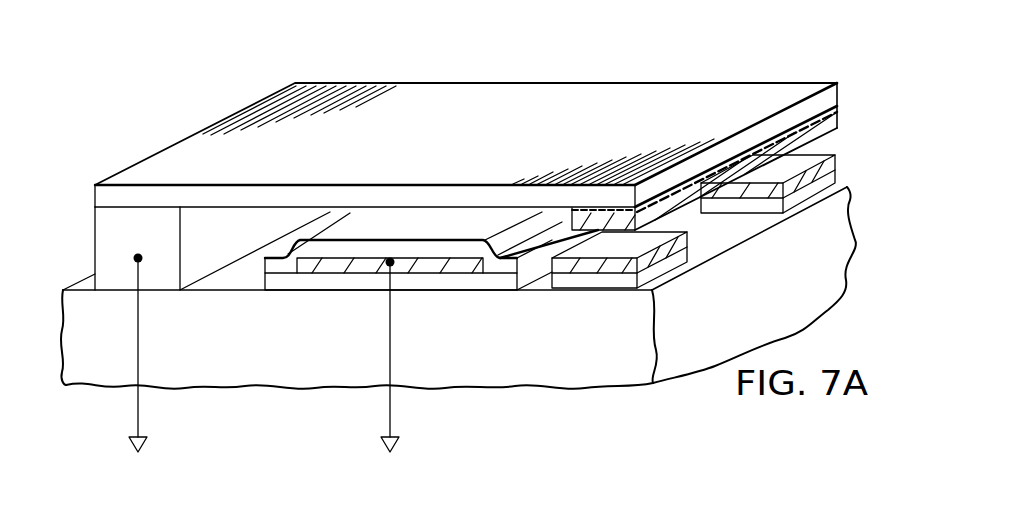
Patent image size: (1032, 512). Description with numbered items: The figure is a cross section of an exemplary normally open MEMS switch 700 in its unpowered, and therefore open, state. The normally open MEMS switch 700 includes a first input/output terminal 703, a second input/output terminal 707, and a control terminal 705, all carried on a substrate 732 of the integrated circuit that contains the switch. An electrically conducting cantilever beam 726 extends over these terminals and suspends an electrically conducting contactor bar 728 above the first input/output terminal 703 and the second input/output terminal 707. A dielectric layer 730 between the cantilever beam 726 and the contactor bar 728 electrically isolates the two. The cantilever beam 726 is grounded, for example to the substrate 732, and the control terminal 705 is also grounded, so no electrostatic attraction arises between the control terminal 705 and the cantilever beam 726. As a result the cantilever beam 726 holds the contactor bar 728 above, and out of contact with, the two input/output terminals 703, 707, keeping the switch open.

The normally open MEMS switch 700 is at (324, 52).
The electrically conducting cantilever beam 726 is at (568, 90).
The dielectric layer 730 is at (838, 107).
The electrically conducting contactor bar 728 is at (832, 125).
The first input/output terminal 703 is at (818, 184).
The second input/output terminal 707 is at (661, 280).
The control terminal 705 is at (322, 267).
The substrate 732 is at (542, 350).